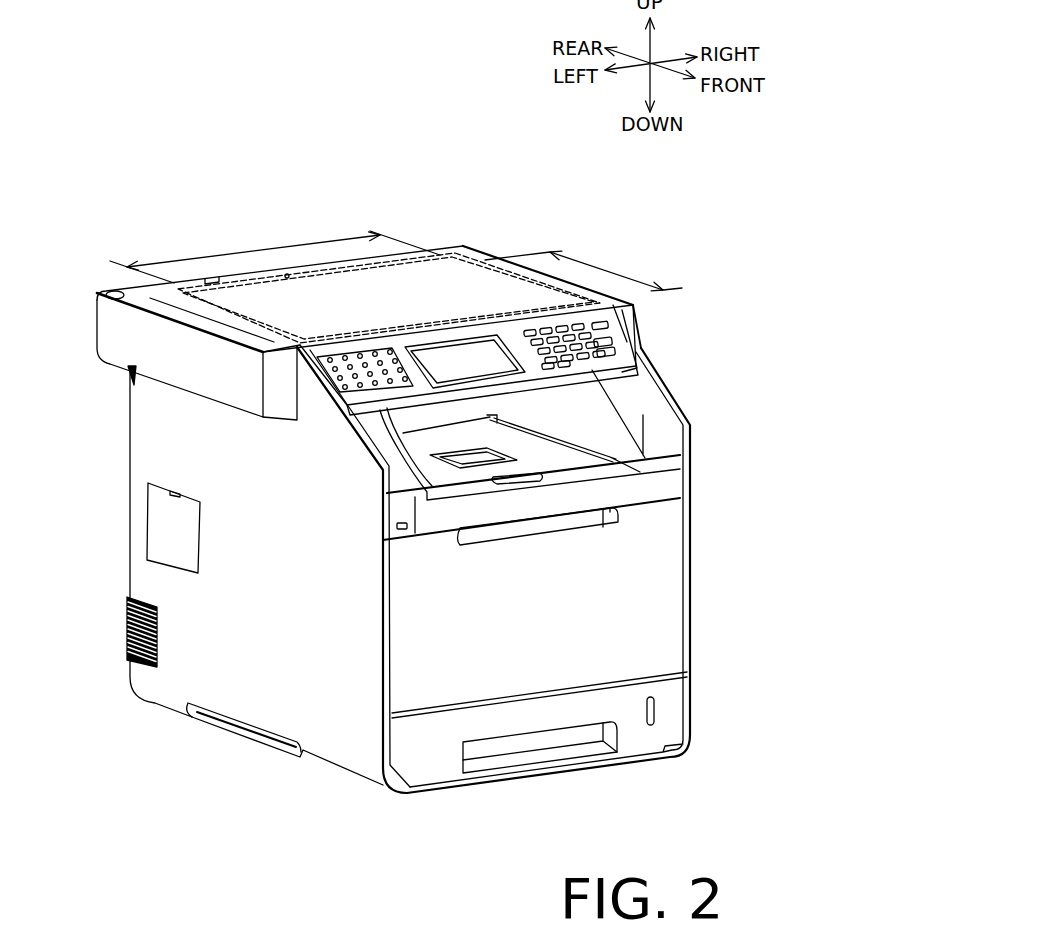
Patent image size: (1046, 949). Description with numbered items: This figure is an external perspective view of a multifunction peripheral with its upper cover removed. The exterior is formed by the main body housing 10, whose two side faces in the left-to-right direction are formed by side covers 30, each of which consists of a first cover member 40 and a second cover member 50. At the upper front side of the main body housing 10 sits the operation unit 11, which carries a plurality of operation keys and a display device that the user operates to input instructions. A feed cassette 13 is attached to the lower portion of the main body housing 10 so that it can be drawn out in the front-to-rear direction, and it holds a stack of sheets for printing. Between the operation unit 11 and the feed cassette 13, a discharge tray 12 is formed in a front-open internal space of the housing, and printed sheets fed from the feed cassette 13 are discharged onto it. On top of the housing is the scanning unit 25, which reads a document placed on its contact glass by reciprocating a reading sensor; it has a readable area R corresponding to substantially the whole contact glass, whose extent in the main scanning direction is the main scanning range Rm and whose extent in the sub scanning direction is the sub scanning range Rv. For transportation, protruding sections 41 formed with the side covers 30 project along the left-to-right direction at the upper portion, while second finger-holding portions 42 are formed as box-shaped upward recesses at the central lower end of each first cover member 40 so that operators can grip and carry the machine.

The main body housing 10 is at (663, 580).
The operation unit 11 is at (618, 362).
The discharge tray 12 is at (597, 432).
The feed cassette 13 is at (425, 753).
The scanning unit 25 is at (430, 287).
The side cover 30 is at (143, 447).
The first cover member 40 is at (145, 575).
The protruding section 41 is at (122, 347).
The second finger-holding portion 42 is at (243, 725).
The second cover member 50 is at (130, 328).
The sub scanning range Rv is at (252, 250).
The readable area R is at (526, 308).
The main scanning range Rm is at (606, 270).